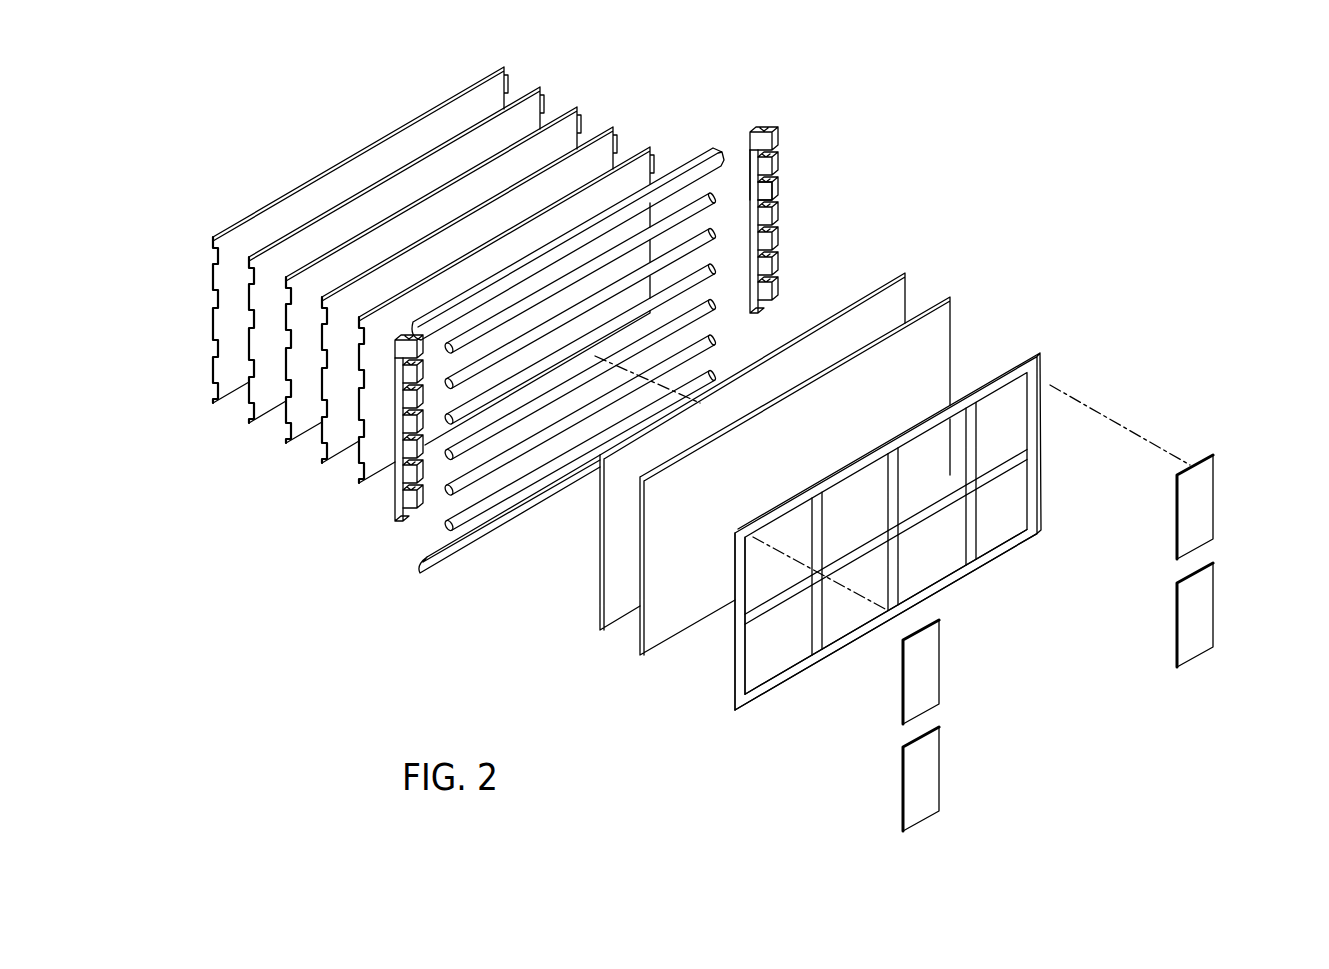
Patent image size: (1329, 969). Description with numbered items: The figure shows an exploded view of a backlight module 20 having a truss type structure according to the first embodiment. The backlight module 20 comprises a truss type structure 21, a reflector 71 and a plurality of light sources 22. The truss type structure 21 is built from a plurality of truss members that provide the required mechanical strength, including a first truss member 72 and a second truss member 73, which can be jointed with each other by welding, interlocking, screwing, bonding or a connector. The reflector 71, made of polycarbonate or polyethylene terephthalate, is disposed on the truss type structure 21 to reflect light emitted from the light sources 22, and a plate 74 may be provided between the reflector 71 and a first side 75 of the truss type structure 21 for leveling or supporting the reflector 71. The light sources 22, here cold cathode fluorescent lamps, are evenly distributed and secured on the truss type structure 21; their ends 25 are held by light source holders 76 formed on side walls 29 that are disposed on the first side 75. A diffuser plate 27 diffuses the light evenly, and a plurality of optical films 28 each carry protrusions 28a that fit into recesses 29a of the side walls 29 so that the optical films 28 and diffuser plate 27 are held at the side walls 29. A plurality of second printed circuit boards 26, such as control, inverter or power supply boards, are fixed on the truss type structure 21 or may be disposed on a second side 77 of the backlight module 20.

The backlight module 20 is at (905, 187).
The truss type structure 21 is at (1068, 381).
The light sources 22 is at (689, 140).
The ends of the light sources 25 is at (718, 338).
The second printed circuit boards 26 is at (1210, 478).
The diffuser plate 27 is at (640, 163).
The optical films 28 is at (395, 506).
The protrusions 28a is at (210, 304).
The side walls 29 is at (775, 132).
The recesses 29a is at (750, 155).
The reflector 71 is at (897, 300).
The first truss member 72 is at (1000, 390).
The second truss member 73 is at (925, 435).
The plate 74 is at (935, 330).
The first side 75 is at (736, 695).
The light source holders 76 is at (776, 185).
The second side 77 is at (782, 692).